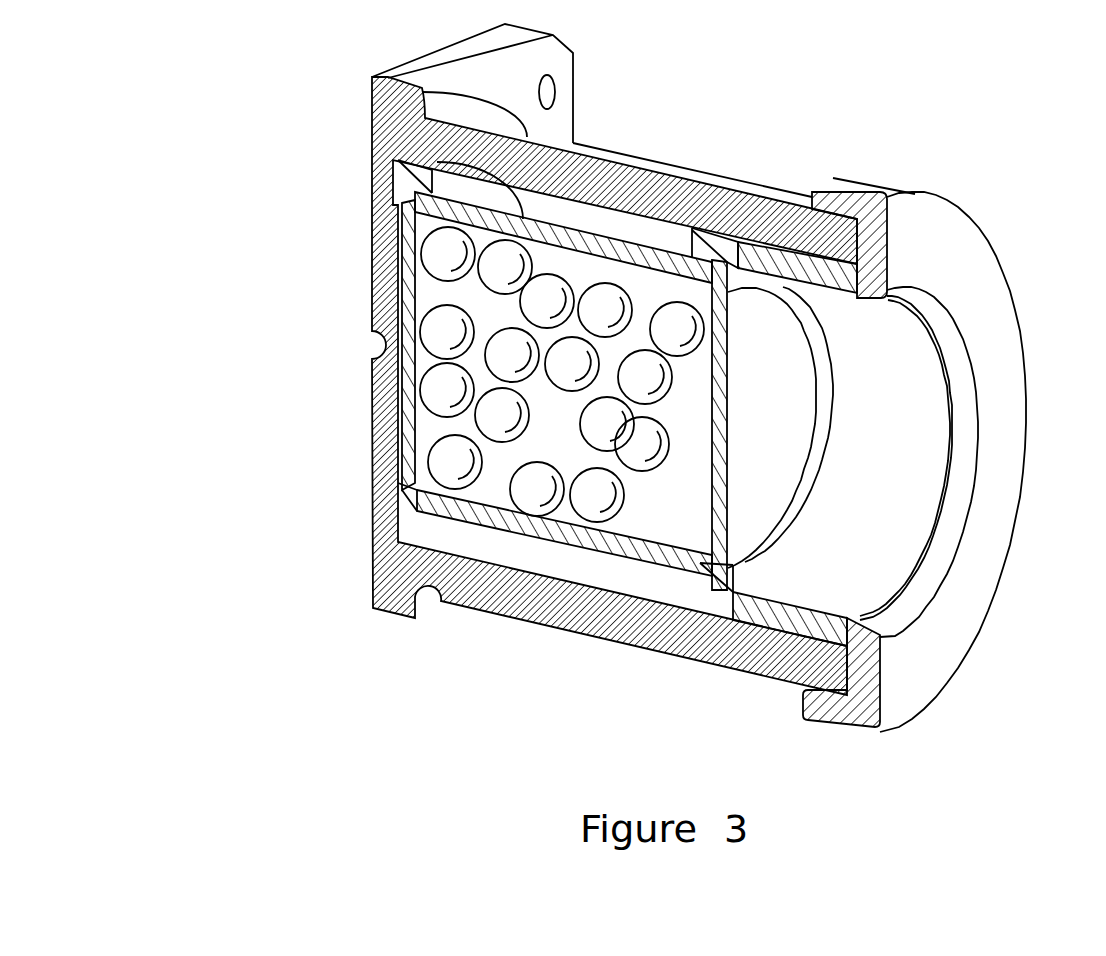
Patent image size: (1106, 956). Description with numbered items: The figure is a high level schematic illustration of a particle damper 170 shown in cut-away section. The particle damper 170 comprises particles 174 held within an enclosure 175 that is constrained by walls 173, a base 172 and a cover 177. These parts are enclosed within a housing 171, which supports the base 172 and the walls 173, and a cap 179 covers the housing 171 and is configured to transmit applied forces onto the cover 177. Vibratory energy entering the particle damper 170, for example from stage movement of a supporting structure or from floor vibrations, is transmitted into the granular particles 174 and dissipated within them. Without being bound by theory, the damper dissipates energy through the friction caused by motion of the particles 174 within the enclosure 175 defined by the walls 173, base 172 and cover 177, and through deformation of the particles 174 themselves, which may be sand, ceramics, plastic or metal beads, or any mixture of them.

The particle damper 170 is at (226, 67).
The housing 171 is at (388, 122).
The base 172 is at (369, 568).
The walls 173 is at (458, 520).
The particles 174 is at (537, 480).
The enclosure 175 is at (668, 500).
The cover 177 is at (722, 536).
The cap 179 is at (993, 278).